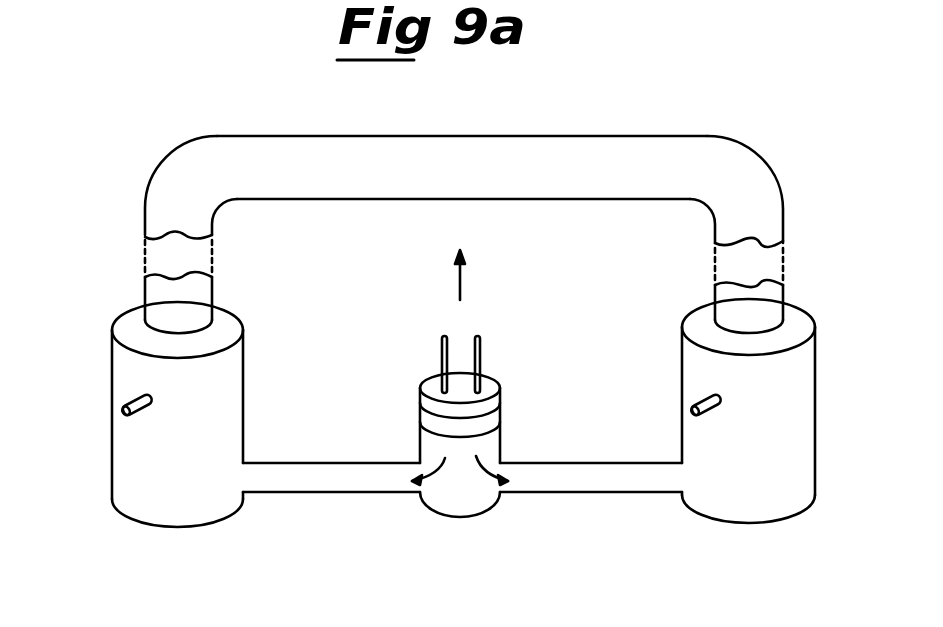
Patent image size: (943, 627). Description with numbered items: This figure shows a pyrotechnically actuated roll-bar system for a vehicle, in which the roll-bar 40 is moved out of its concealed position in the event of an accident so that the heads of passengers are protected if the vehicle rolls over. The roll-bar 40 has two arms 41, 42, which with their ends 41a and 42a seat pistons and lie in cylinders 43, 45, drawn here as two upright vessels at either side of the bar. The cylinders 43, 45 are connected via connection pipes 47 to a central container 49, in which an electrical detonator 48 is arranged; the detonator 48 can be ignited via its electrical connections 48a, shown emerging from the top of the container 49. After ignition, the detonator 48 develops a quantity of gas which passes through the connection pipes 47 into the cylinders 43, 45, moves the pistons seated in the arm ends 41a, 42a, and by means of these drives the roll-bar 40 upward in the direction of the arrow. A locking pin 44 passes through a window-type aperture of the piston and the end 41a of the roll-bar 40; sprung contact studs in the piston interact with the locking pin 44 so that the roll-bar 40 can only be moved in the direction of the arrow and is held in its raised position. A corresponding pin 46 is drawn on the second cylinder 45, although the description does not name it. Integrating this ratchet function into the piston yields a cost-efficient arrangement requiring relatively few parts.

The roll-bar 40 is at (348, 145).
The arm 41 is at (152, 229).
The end of the arm 41a is at (153, 290).
The arm 42 is at (776, 235).
The end of the arm 42a is at (762, 304).
The cylinder 43 is at (142, 454).
The locking pin 44 is at (135, 405).
The cylinder 45 is at (798, 437).
The right vessel nozzle 46 is at (700, 405).
The connection pipes 47 is at (335, 489).
The electrical detonator 48 is at (430, 424).
The electrical connections 48a is at (448, 333).
The container 49 is at (492, 448).